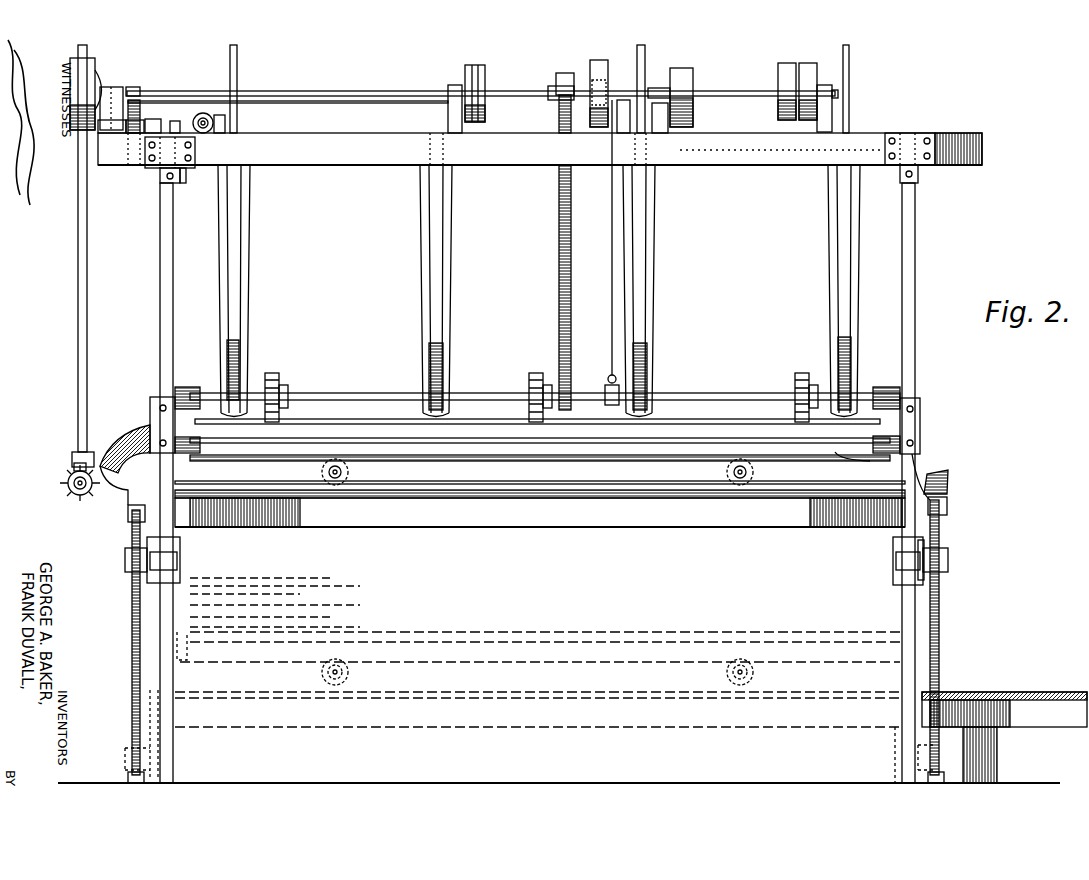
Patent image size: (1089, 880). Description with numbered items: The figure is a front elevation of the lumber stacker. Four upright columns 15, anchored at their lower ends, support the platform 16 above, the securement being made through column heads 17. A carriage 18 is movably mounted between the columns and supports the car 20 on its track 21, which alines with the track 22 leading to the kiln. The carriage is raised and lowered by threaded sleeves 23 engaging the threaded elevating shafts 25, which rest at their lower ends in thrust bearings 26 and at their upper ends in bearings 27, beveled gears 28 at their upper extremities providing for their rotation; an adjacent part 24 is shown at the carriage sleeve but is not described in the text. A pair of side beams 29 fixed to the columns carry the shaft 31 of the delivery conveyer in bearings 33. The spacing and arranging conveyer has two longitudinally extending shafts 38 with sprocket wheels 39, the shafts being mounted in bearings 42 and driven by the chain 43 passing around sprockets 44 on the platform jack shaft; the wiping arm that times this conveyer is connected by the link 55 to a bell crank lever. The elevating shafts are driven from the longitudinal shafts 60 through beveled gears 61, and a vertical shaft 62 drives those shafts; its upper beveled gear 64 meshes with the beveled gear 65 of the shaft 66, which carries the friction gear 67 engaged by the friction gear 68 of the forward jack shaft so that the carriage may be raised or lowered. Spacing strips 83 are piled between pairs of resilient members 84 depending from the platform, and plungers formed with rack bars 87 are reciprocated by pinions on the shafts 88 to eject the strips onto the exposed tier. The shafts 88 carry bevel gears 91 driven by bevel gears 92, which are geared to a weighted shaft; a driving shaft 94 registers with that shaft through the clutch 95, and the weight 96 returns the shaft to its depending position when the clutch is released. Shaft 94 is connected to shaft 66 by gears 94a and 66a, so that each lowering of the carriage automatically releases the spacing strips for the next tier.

The upright column 15 is at (916, 240).
The platform 16 is at (782, 160).
The column head 17 is at (919, 170).
The carriage 18 is at (181, 546).
The car 20 is at (546, 484).
The track 21 is at (382, 527).
The track 22 is at (1018, 700).
The threaded sleeve 23 is at (936, 574).
The nut block 24 is at (949, 558).
The threaded elevating shaft 25 is at (132, 621).
The thrust bearing 26 is at (128, 778).
The bearing 27 is at (947, 504).
The beveled gear 28 is at (945, 481).
The side beam 29 is at (921, 419).
The shaft 31 is at (900, 456).
The bearing 33 is at (183, 460).
The longitudinally extending shaft 38 is at (362, 393).
The sprocket wheel 39 is at (280, 384).
The bearing 42 is at (190, 387).
The chain 43 is at (559, 238).
The sprocket 44 is at (560, 80).
The link 55 is at (611, 312).
The longitudinally extending shaft 60 is at (463, 492).
The beveled gear 61 is at (74, 492).
The vertical shaft 62 is at (78, 296).
The beveled gear 64 is at (82, 102).
The beveled gear 65 is at (118, 104).
The shaft 66 is at (185, 95).
The gear 66a is at (134, 87).
The friction gear 67 is at (692, 76).
The friction gear 68 is at (693, 100).
The spacing strip 83 is at (240, 356).
The resilient member 84 is at (246, 292).
The rack bar 87 is at (238, 70).
The longitudinally extending shaft 88 is at (481, 109).
The bevel gear 91 is at (216, 115).
The bevel gear 92 is at (198, 114).
The driving shaft 94 is at (126, 135).
The gear 94a is at (136, 134).
The clutch 95 is at (141, 118).
The weight 96 is at (182, 182).